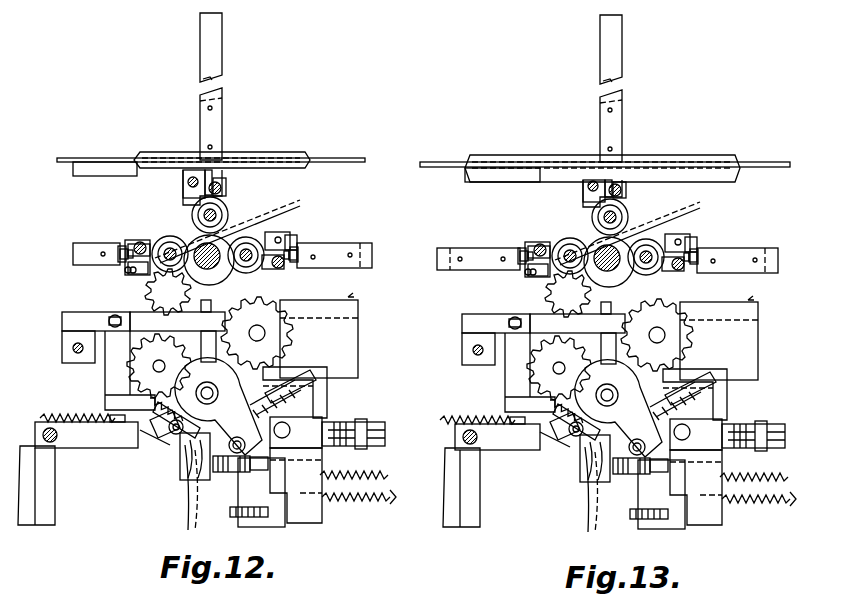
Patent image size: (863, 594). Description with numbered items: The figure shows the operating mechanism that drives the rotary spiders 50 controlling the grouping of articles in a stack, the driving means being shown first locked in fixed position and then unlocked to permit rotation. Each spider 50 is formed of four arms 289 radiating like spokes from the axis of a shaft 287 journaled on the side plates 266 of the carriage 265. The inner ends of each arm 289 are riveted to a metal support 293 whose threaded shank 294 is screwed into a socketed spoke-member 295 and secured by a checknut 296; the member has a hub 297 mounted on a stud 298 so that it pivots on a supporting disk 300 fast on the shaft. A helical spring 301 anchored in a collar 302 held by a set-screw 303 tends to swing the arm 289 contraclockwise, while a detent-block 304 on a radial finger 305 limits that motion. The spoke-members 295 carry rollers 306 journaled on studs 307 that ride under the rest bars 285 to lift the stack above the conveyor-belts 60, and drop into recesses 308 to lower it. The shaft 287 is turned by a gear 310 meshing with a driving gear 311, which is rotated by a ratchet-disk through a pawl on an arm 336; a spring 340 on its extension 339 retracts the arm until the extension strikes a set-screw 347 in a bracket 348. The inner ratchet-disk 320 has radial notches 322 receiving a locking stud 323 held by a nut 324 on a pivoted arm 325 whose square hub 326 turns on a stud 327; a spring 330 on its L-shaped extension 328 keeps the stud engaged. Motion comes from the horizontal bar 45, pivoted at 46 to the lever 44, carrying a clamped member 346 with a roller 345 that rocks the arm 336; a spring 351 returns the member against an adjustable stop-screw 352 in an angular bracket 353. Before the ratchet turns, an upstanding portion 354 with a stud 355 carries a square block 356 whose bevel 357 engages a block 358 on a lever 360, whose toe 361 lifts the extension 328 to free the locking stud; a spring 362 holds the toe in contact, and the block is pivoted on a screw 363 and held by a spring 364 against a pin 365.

In FIG. 12, the lever 44 is at (50, 510).
In FIG. 13, the lever 44 is at (452, 503).
In FIG. 12, the horizontal bar 45 is at (85, 455).
In FIG. 13, the horizontal bar 45 is at (484, 488).
In FIG. 12, the pivot 46 is at (45, 428).
In FIG. 13, the pivot 46 is at (480, 436).
In FIG. 12, the rotary spider 50 is at (231, 73).
In FIG. 13, the rotary spider 50 is at (592, 49).
In FIG. 12, the conveyor-belt 60 is at (340, 158).
In FIG. 13, the conveyor-belt 60 is at (605, 142).
In FIG. 12, the carriage 265 is at (350, 296).
In FIG. 13, the carriage 265 is at (778, 298).
In FIG. 12, the side plate 266 is at (325, 325).
In FIG. 13, the side plate 266 is at (742, 341).
In FIG. 12, the rest bar 285 is at (305, 166).
In FIG. 13, the rest bar 285 is at (602, 149).
In FIG. 12, the shaft 287 is at (272, 222).
In FIG. 13, the shaft 287 is at (679, 224).
In FIG. 12, the arm 289 is at (212, 118).
In FIG. 13, the arm 289 is at (615, 161).
In FIG. 12, the metal support 293 is at (122, 260).
In FIG. 13, the metal support 293 is at (611, 271).
In FIG. 12, the threaded shank 294 is at (128, 258).
In FIG. 13, the threaded shank 294 is at (603, 267).
In FIG. 12, the socketed spoke-member 295 is at (122, 246).
In FIG. 13, the socketed spoke-member 295 is at (636, 279).
In FIG. 12, the checknut 296 is at (130, 275).
In FIG. 13, the checknut 296 is at (597, 255).
In FIG. 12, the hub 297 is at (165, 238).
In FIG. 13, the hub 297 is at (631, 205).
In FIG. 12, the stud 298 is at (225, 230).
In FIG. 13, the stud 298 is at (599, 265).
In FIG. 12, the supporting disk 300 is at (192, 215).
In FIG. 13, the supporting disk 300 is at (577, 216).
In FIG. 12, the helical spring 301 is at (190, 186).
In FIG. 13, the helical spring 301 is at (593, 220).
In FIG. 12, the collar 302 is at (195, 200).
In FIG. 13, the collar 302 is at (582, 193).
In FIG. 12, the set-screw 303 is at (290, 203).
In FIG. 13, the set-screw 303 is at (627, 225).
In FIG. 12, the detent-block 304 is at (193, 176).
In FIG. 13, the detent-block 304 is at (612, 213).
In FIG. 12, the radial finger 305 is at (205, 176).
In FIG. 13, the radial finger 305 is at (576, 230).
In FIG. 12, the roller 306 is at (224, 183).
In FIG. 13, the roller 306 is at (583, 176).
In FIG. 12, the stud 307 is at (217, 182).
In FIG. 13, the stud 307 is at (600, 192).
In FIG. 12, the slot or recess 308 is at (137, 162).
In FIG. 13, the slot or recess 308 is at (502, 185).
In FIG. 12, the gear 310 is at (265, 340).
In FIG. 13, the gear 310 is at (684, 332).
In FIG. 12, the driving gear 311 is at (257, 333).
In FIG. 13, the driving gear 311 is at (657, 335).
In FIG. 12, the ratchet-disk 320 is at (240, 380).
In FIG. 13, the ratchet-disk 320 is at (647, 379).
In FIG. 12, the radial notch 322 is at (159, 366).
In FIG. 13, the radial notch 322 is at (527, 371).
In FIG. 12, the locking stud 323 is at (177, 321).
In FIG. 13, the locking stud 323 is at (544, 351).
In FIG. 12, the nut 324 is at (215, 265).
In FIG. 13, the nut 324 is at (630, 274).
In FIG. 12, the pivoted arm 325 is at (62, 320).
In FIG. 13, the pivoted arm 325 is at (475, 322).
In FIG. 12, the square hub 326 is at (62, 343).
In FIG. 13, the square hub 326 is at (457, 347).
In FIG. 12, the stud 327 is at (73, 350).
In FIG. 13, the stud 327 is at (451, 357).
In FIG. 12, the L-shaped extension 328 is at (107, 370).
In FIG. 13, the L-shaped extension 328 is at (487, 372).
In FIG. 12, the spring 330 is at (42, 416).
In FIG. 13, the spring 330 is at (467, 404).
In FIG. 12, the arm 336 is at (215, 475).
In FIG. 13, the arm 336 is at (666, 499).
In FIG. 12, the extension 339 is at (330, 470).
In FIG. 13, the extension 339 is at (740, 498).
In FIG. 12, the spring 340 is at (388, 495).
In FIG. 13, the spring 340 is at (763, 481).
In FIG. 12, the roller 345 is at (302, 390).
In FIG. 13, the roller 345 is at (707, 401).
In FIG. 12, the member 346 is at (295, 500).
In FIG. 13, the member 346 is at (714, 487).
In FIG. 12, the set-screw 347 is at (290, 375).
In FIG. 13, the set-screw 347 is at (694, 378).
In FIG. 12, the bracket 348 is at (280, 392).
In FIG. 13, the bracket 348 is at (693, 396).
In FIG. 12, the spring 351 is at (378, 503).
In FIG. 13, the spring 351 is at (765, 516).
In FIG. 12, the adjustable stop-screw 352 is at (357, 419).
In FIG. 13, the adjustable stop-screw 352 is at (734, 423).
In FIG. 12, the angular bracket 353 is at (328, 372).
In FIG. 13, the angular bracket 353 is at (732, 383).
In FIG. 12, the upstanding portion 354 is at (290, 530).
In FIG. 13, the upstanding portion 354 is at (627, 501).
In FIG. 12, the stud 355 is at (240, 518).
In FIG. 13, the stud 355 is at (618, 515).
In FIG. 12, the square block 356 is at (185, 480).
In FIG. 13, the square block 356 is at (588, 473).
In FIG. 12, the bevel 357 is at (190, 455).
In FIG. 13, the bevel 357 is at (556, 463).
In FIG. 12, the block 358 is at (177, 434).
In FIG. 13, the block 358 is at (547, 466).
In FIG. 12, the lever 360 is at (185, 480).
In FIG. 13, the lever 360 is at (553, 497).
In FIG. 12, the toe 361 is at (150, 428).
In FIG. 13, the toe 361 is at (543, 442).
In FIG. 12, the spring 362 is at (140, 374).
In FIG. 13, the spring 362 is at (503, 369).
In FIG. 12, the screw 363 is at (160, 445).
In FIG. 13, the screw 363 is at (543, 462).
In FIG. 12, the spring 364 is at (212, 382).
In FIG. 13, the spring 364 is at (621, 375).
In FIG. 12, the pin 365 is at (178, 525).
In FIG. 13, the pin 365 is at (555, 510).